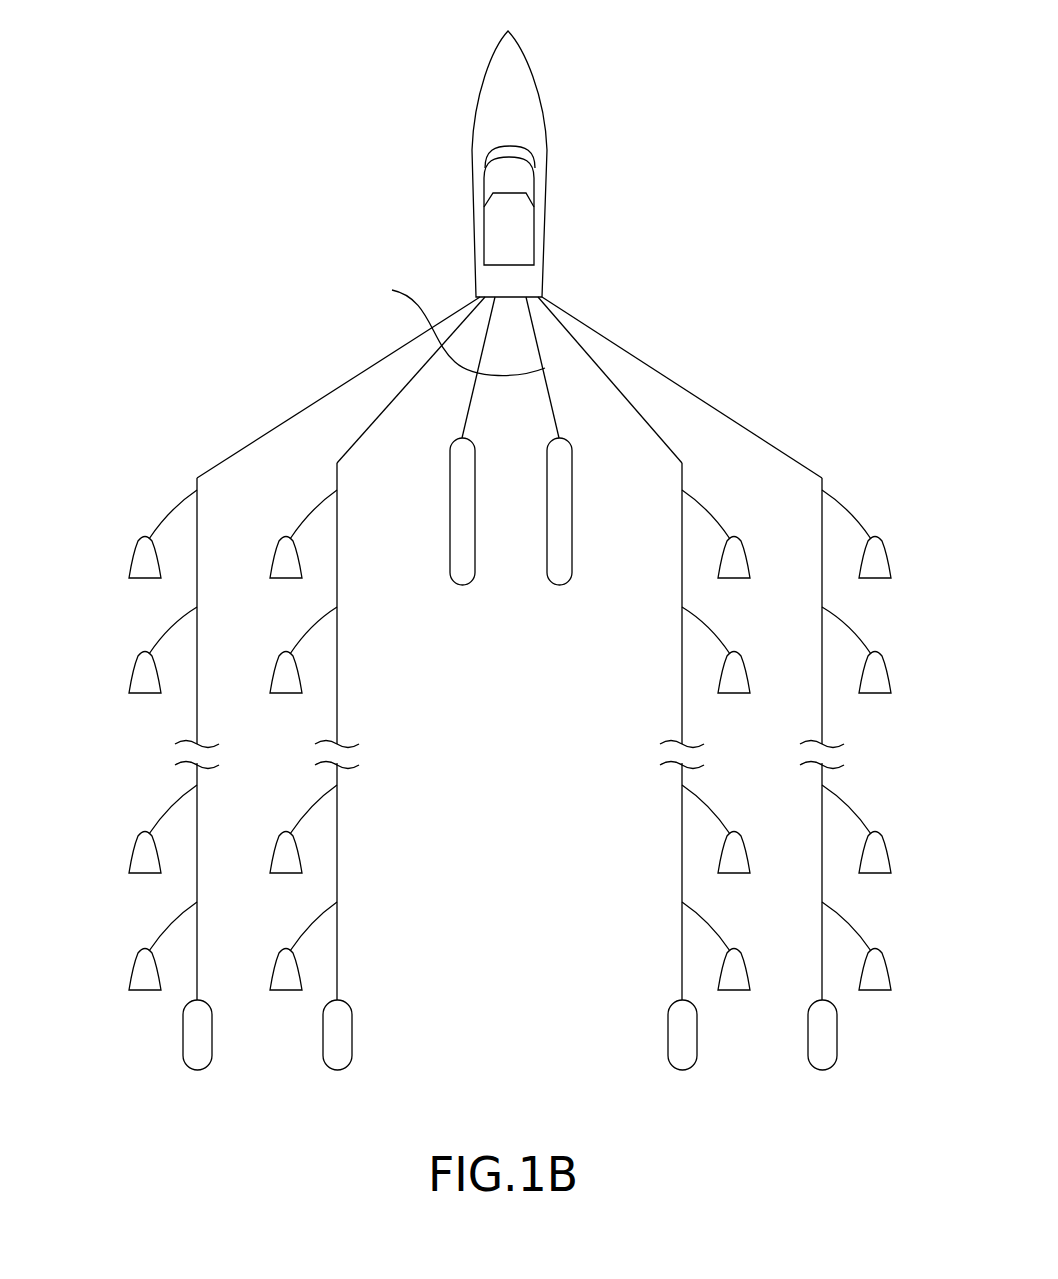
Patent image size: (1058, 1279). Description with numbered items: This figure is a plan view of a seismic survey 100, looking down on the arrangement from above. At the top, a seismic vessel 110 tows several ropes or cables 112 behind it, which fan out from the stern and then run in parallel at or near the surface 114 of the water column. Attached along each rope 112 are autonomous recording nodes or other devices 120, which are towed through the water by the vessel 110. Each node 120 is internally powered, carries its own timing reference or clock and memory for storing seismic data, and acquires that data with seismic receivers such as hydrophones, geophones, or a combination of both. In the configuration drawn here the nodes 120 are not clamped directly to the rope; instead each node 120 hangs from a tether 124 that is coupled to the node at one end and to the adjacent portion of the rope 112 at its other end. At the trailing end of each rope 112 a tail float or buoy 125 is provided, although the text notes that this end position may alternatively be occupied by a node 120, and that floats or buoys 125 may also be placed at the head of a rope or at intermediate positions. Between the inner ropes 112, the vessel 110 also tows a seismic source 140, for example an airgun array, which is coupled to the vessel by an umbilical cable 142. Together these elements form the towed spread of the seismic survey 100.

The seismic survey 100 is at (710, 135).
The seismic vessel 110 is at (480, 108).
The ropes or cables 112 is at (367, 431).
The surface 114 is at (523, 761).
The seismic nodes 120 is at (140, 558).
The tether 124 is at (158, 513).
The tail float or buoy 125 is at (200, 1037).
The seismic source 140 is at (458, 558).
The umbilical cable 142 is at (446, 324).